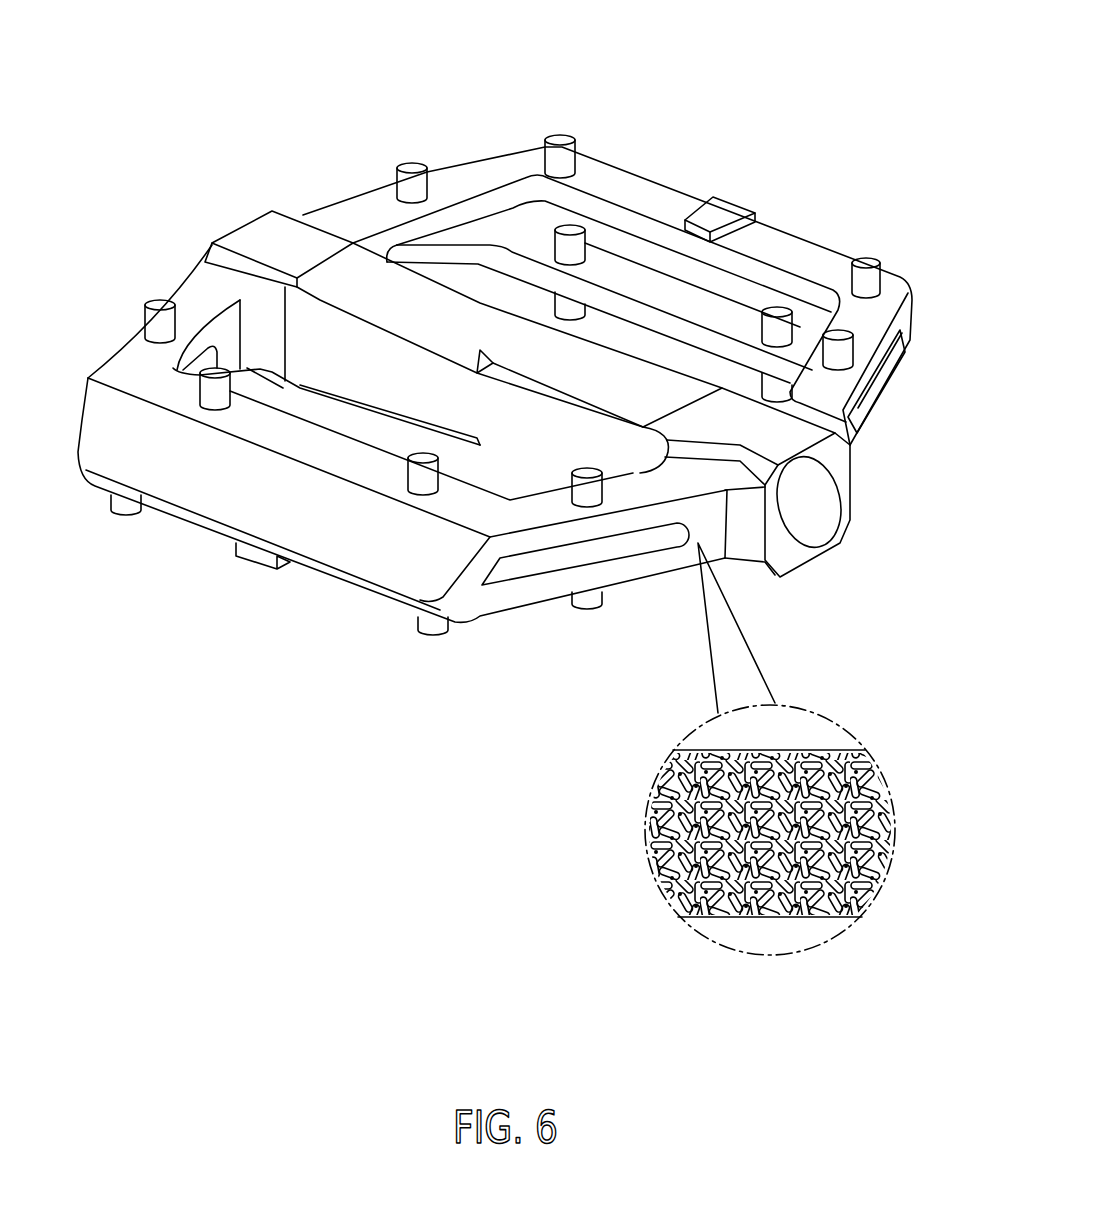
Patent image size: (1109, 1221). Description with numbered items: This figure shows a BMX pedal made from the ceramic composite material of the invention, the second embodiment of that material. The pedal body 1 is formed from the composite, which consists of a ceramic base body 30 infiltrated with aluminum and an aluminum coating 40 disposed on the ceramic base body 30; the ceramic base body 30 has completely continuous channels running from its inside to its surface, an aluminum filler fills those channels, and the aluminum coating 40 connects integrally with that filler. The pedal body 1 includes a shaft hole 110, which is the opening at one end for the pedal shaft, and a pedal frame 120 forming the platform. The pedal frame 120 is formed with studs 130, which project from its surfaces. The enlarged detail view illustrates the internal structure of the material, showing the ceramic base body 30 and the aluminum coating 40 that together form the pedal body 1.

The pedal body 1 is at (666, 152).
The shaft hole 110 is at (822, 502).
The pedal frame 120 is at (777, 238).
The studs 130 is at (410, 163).
The ceramic base body 30 is at (664, 808).
The aluminum coating 40 is at (805, 755).